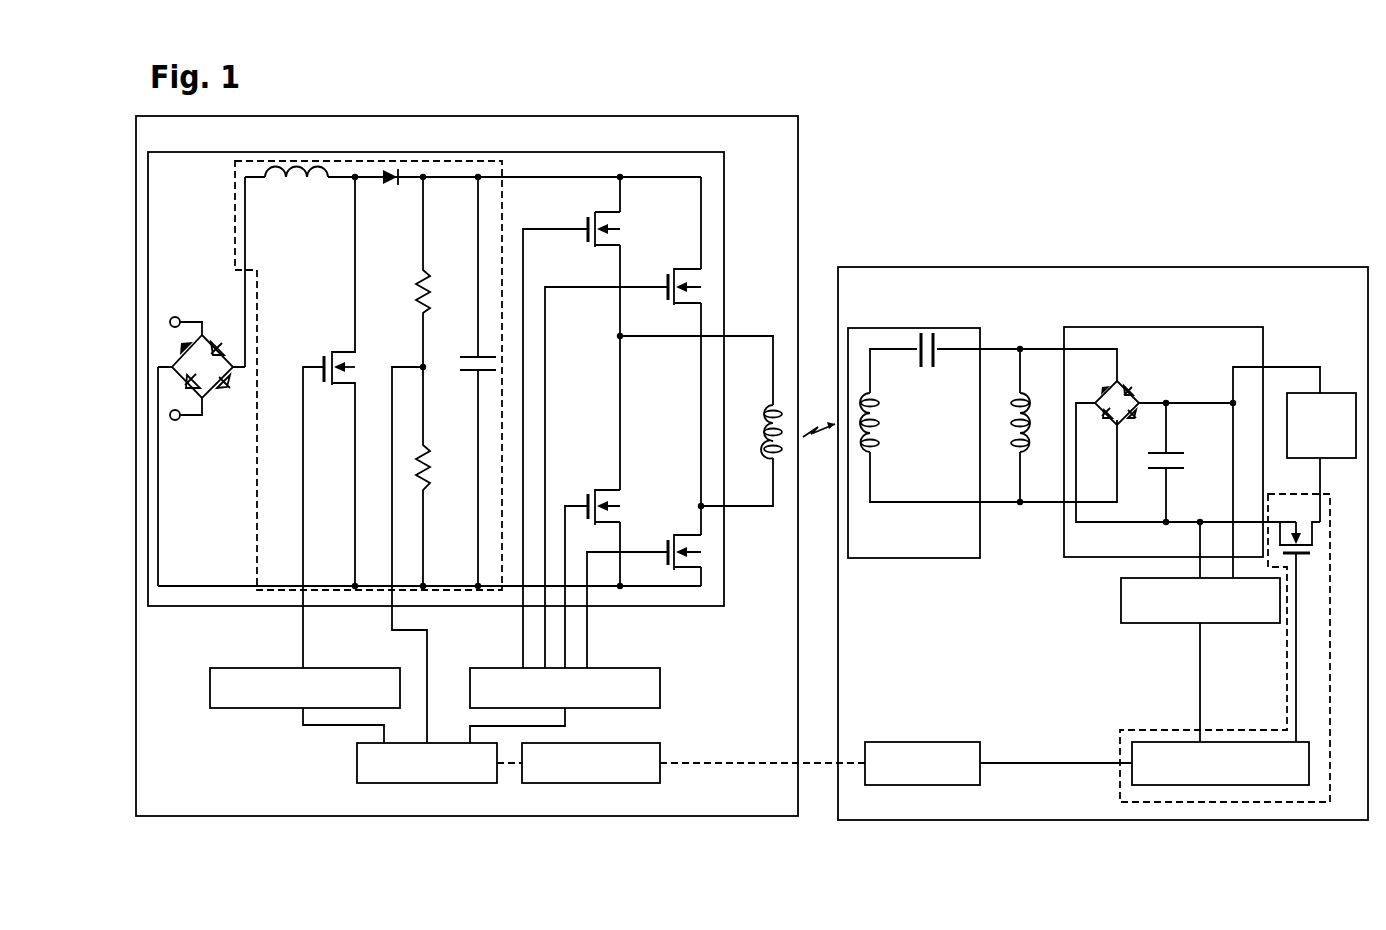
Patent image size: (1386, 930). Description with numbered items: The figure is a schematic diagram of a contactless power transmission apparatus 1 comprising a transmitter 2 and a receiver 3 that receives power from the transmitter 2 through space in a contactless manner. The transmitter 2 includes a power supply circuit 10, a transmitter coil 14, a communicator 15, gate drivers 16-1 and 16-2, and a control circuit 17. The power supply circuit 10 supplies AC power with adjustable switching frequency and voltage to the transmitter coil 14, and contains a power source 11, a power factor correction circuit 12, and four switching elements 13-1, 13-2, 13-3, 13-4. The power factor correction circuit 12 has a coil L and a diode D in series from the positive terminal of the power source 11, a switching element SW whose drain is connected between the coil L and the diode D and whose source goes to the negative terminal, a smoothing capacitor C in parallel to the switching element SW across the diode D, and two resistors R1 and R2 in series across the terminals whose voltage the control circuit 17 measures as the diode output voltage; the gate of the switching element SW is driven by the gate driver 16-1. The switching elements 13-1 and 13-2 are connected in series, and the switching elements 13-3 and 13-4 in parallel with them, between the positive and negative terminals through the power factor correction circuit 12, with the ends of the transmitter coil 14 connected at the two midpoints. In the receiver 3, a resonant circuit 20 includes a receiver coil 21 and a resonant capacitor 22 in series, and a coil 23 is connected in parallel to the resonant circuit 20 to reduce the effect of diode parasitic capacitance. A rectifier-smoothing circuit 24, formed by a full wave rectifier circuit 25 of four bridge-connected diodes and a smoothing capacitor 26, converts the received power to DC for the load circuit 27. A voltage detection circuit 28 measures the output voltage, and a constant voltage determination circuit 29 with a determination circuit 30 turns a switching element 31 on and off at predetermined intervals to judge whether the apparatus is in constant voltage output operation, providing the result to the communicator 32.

The contactless power transmission apparatus 1 is at (1283, 241).
The transmitter 2 is at (728, 816).
The receiver 3 is at (1345, 820).
The power supply circuit 10 is at (655, 606).
The power source 11 is at (222, 412).
The power factor correction circuit 12 is at (455, 590).
The switching element 13-1 is at (592, 212).
The switching element 13-2 is at (606, 488).
The switching element 13-3 is at (699, 277).
The switching element 13-4 is at (705, 545).
The transmitter coil 14 is at (765, 412).
The communicator 15 is at (590, 783).
The gate driver 16-1 is at (245, 708).
The gate driver 16-2 is at (660, 688).
The control circuit 17 is at (421, 783).
The resonant circuit 20 is at (982, 476).
The receiver coil 21 is at (878, 424).
The resonant capacitor 22 is at (917, 361).
The coil 23 is at (1028, 455).
The rectifier-smoothing circuit 24 is at (1192, 476).
The full wave rectifier circuit 25 is at (1138, 384).
The smoothing capacitor 26 is at (1146, 462).
The load circuit 27 is at (1337, 393).
The voltage detection circuit 28 is at (1135, 623).
The constant voltage determination circuit 29 is at (1262, 802).
The determination circuit 30 is at (1188, 785).
The switching element 31 is at (1313, 549).
The communicator 32 is at (935, 785).
The coil L is at (296, 190).
The diode D is at (389, 187).
The switching element SW is at (329, 422).
The resistor R1 is at (435, 272).
The resistor R2 is at (435, 476).
The smoothing capacitor C is at (467, 381).